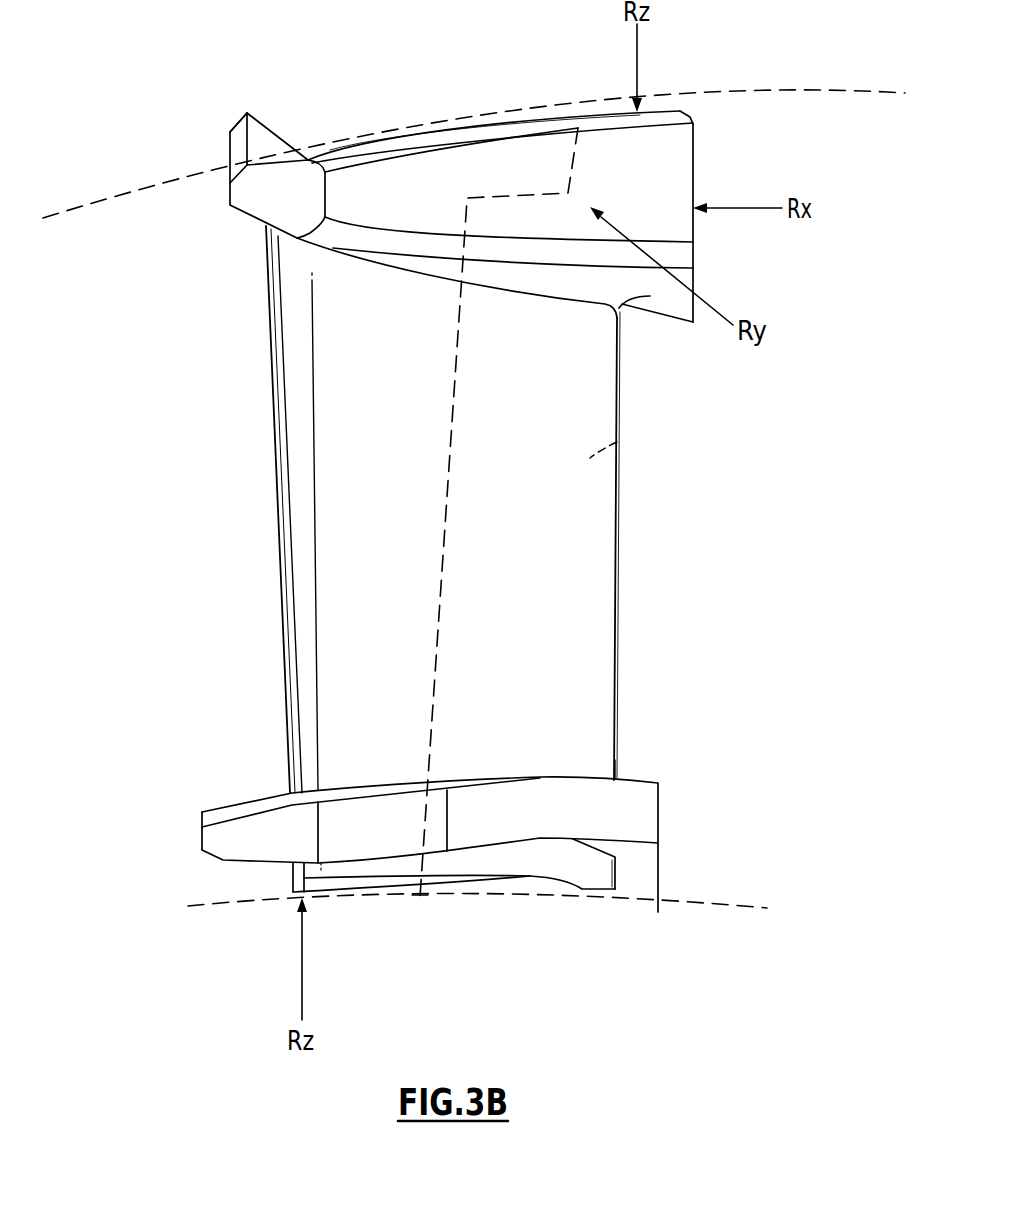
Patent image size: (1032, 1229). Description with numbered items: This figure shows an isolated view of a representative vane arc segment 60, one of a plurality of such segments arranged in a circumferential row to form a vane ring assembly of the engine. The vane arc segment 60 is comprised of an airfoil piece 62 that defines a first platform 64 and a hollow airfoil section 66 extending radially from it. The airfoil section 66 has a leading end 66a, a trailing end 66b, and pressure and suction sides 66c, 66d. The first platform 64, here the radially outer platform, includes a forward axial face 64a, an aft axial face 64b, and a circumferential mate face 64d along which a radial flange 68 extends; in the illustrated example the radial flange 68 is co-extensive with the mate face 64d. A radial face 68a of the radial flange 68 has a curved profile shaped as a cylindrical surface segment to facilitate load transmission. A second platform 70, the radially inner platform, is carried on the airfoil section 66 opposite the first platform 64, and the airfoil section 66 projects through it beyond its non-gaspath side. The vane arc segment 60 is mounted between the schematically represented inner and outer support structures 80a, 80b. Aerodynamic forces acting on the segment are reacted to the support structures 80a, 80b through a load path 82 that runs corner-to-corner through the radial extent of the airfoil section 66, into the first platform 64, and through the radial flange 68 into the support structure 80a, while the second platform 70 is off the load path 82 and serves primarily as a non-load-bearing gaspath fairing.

The vane arc segment 60 is at (145, 900).
The airfoil piece 62 is at (264, 524).
The first platform 64 is at (257, 147).
The forward axial face 64a is at (233, 135).
The aft axial face 64b is at (693, 183).
The circumferential mate face 64d is at (650, 147).
The airfoil section 66 is at (318, 427).
The leading end 66a is at (283, 653).
The trailing end 66b is at (620, 655).
The pressure side 66c is at (620, 441).
The suction side 66d is at (318, 353).
The radial flange 68 is at (666, 98).
The radial face 68a is at (430, 128).
The second platform 70 is at (202, 827).
The outer support structure 80a is at (795, 93).
The inner support structure 80b is at (690, 901).
The load path 82 is at (443, 577).